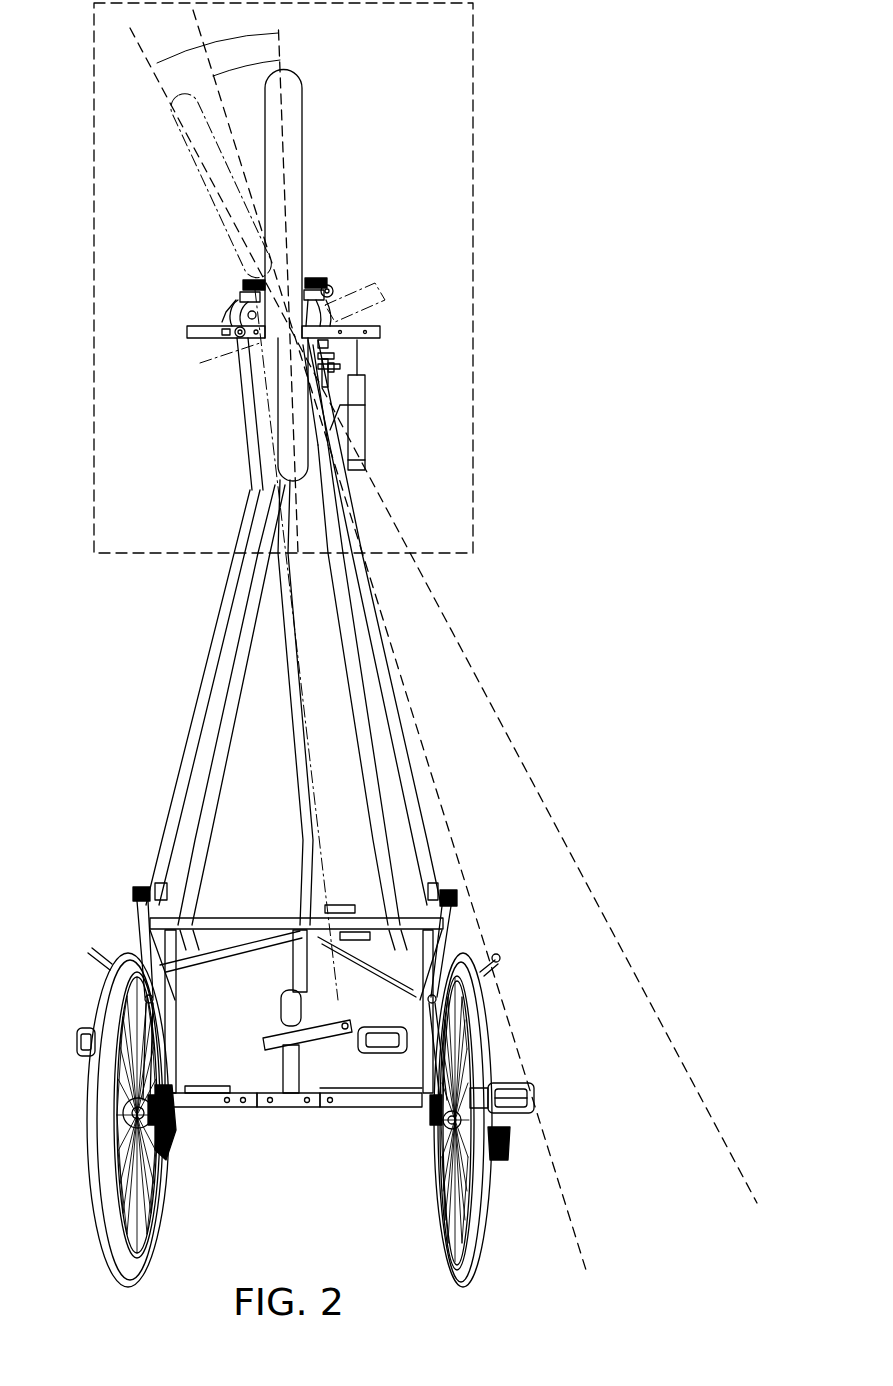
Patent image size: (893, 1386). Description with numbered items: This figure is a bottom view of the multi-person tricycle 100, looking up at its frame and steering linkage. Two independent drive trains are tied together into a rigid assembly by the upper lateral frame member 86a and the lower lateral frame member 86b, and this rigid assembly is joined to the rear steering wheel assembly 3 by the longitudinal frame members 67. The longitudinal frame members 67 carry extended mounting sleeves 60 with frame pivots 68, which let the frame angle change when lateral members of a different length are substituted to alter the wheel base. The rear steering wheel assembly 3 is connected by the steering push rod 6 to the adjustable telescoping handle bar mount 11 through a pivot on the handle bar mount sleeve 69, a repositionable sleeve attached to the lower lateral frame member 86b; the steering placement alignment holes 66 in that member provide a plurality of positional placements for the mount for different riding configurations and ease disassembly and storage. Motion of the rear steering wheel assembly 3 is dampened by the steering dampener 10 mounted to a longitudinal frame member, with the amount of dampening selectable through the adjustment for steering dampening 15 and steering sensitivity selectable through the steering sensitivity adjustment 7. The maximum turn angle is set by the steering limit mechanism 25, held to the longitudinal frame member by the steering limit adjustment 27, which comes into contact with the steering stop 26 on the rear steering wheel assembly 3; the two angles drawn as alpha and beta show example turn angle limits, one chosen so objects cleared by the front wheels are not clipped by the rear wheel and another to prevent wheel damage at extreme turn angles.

The tricycle 100 is at (538, 186).
The rear steering wheel assembly 3 is at (476, 309).
The adjustment for steering dampening 15 is at (362, 322).
The steering stop 26 is at (338, 345).
The steering limit mechanism 25 is at (342, 356).
The steering dampener 10 is at (378, 411).
The steering sensitivity adjustment 7 is at (232, 331).
The steering limit adjustment 27 is at (308, 400).
The frame pivots 68 is at (344, 441).
The extended mounting sleeves 60 is at (320, 495).
The longitudinal frame members 67 is at (349, 663).
The steering push rod 6 is at (276, 640).
The adjustable telescoping handle bar mount 11 is at (294, 969).
The upper lateral frame member 86a is at (246, 928).
The lower lateral frame member 86b is at (178, 1102).
The steering placement alignment holes 66 is at (238, 1108).
The handle bar mount sleeve 69 is at (266, 1108).